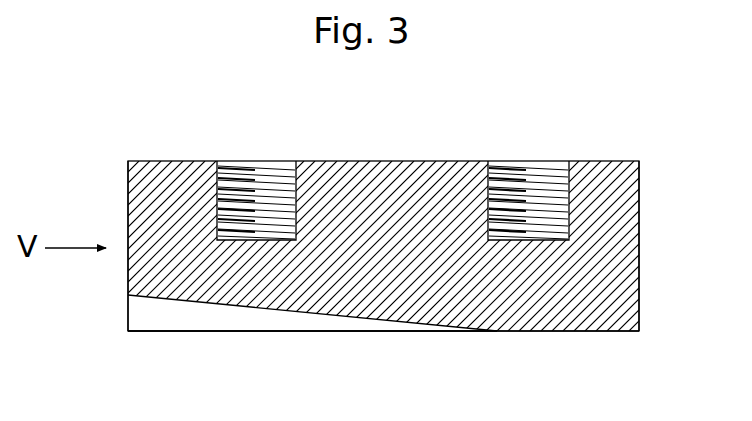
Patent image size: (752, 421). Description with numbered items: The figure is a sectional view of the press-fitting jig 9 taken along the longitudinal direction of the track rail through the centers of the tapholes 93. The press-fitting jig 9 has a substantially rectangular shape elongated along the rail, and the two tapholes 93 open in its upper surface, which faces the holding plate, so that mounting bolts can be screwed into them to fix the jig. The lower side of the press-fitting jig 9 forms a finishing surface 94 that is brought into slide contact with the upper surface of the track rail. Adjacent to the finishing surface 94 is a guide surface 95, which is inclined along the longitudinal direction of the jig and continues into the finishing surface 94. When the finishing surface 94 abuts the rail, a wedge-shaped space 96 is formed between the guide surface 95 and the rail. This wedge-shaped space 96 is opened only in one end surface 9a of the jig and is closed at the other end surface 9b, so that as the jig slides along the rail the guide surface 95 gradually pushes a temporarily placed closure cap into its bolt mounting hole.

The press-fitting jig 9 is at (654, 180).
The one end surface of the press-fitting jig 9a is at (128, 181).
The another end surface of the press-fitting jig 9b is at (639, 238).
The tapholes 93 is at (225, 192).
The finishing surface 94 is at (590, 332).
The guide surface 95 is at (187, 301).
The wedge-shaped space 96 is at (238, 320).